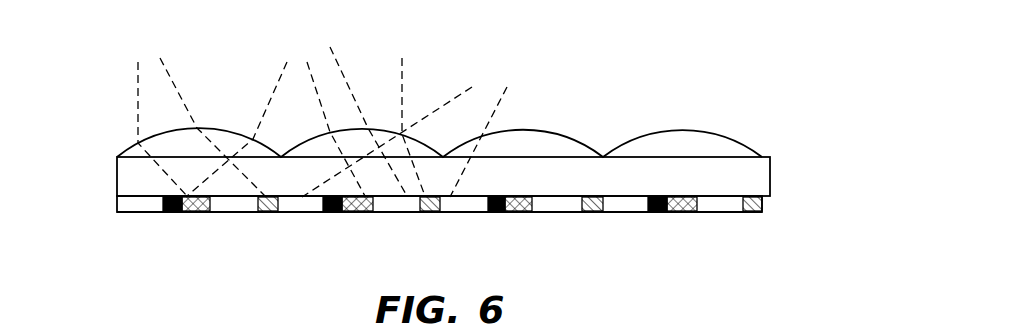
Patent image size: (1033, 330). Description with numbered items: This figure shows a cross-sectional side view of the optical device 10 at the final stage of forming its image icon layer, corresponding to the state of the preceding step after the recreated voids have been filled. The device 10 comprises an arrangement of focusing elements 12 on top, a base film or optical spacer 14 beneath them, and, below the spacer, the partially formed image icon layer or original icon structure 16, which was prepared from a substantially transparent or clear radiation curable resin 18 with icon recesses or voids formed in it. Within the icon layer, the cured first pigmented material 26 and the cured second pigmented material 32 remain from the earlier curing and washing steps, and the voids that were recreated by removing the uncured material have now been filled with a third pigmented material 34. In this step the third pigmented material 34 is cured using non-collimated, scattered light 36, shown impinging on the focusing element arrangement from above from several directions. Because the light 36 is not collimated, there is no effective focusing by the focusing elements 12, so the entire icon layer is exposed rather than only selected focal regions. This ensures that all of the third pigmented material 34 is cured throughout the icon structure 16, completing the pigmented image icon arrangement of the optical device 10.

The optical device 10 is at (716, 106).
The focusing elements 12 is at (766, 151).
The base film or optical spacer 14 is at (558, 187).
The original icon structure 16 is at (113, 204).
The radiation curable resin 18 is at (128, 213).
The cured first pigmented material 26 is at (203, 213).
The cured second pigmented material 32 is at (172, 213).
The third pigmented material 34 is at (268, 213).
The non-collimated light 36 is at (338, 65).